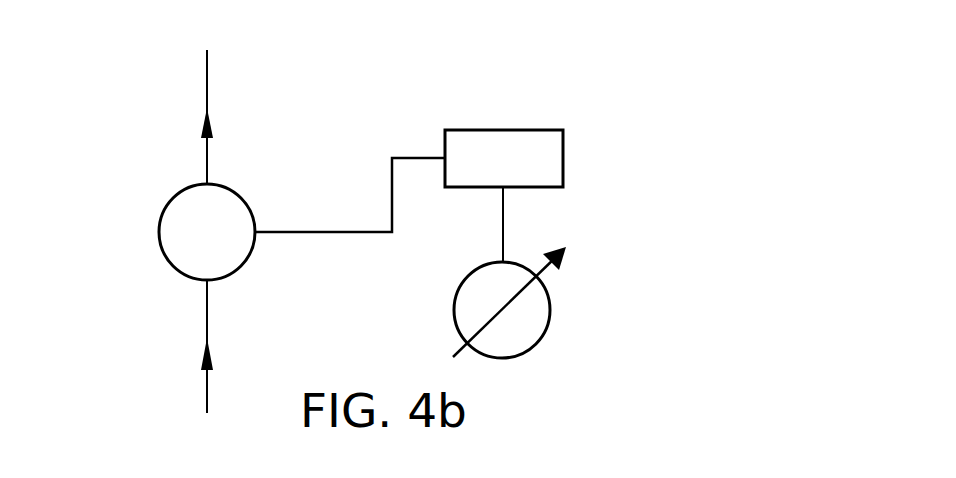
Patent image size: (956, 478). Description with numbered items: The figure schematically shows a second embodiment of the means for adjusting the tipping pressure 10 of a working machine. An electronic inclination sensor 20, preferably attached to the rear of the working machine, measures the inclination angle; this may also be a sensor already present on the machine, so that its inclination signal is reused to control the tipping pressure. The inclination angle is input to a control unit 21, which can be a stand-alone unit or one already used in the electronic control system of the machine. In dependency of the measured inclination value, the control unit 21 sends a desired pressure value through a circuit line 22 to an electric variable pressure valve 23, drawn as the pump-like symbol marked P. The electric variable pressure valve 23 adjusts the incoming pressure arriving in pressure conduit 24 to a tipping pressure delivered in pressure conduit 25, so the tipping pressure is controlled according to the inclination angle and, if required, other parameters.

The means for adjusting the tipping pressure 10 is at (547, 90).
The electronic inclination sensor 20 is at (550, 310).
The control unit 21 is at (563, 158).
The circuit line 22 is at (323, 232).
The electric variable pressure valve 23 is at (158, 232).
The pressure conduit 24 is at (207, 390).
The pressure conduit 25 is at (207, 87).